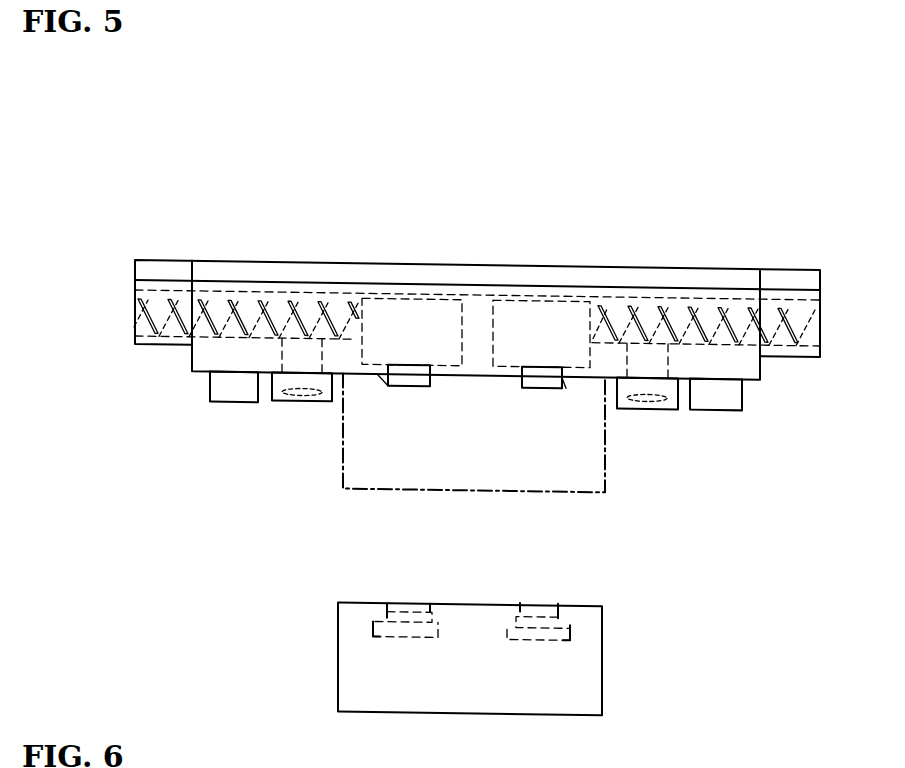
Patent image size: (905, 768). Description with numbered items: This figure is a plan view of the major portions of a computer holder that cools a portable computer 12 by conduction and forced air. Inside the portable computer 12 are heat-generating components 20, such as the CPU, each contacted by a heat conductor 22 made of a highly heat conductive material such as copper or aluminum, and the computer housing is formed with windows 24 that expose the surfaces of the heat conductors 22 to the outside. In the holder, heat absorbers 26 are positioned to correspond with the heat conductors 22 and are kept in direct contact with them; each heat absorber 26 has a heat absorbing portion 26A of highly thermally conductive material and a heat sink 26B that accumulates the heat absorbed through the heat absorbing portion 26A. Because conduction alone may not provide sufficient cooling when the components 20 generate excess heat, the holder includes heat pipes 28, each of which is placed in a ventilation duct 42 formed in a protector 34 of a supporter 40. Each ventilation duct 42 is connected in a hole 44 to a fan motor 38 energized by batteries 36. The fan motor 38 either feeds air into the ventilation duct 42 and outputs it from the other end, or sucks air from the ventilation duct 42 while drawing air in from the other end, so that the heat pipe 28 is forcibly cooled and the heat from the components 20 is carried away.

The portable computer 12 is at (605, 484).
The heat-generating components 20 is at (375, 632).
The heat conductors 22 is at (385, 614).
The windows 24 is at (423, 597).
The heat absorbers 26 is at (385, 369).
The heat absorbing portion 26A is at (413, 374).
The heat sink 26B is at (420, 306).
The heat pipes 28 is at (242, 296).
The protector 34 is at (165, 278).
The batteries 36 is at (237, 394).
The fan motors 38 is at (278, 398).
The supporter 40 is at (781, 257).
The ventilation duct 42 is at (313, 298).
The hole 44 is at (275, 362).